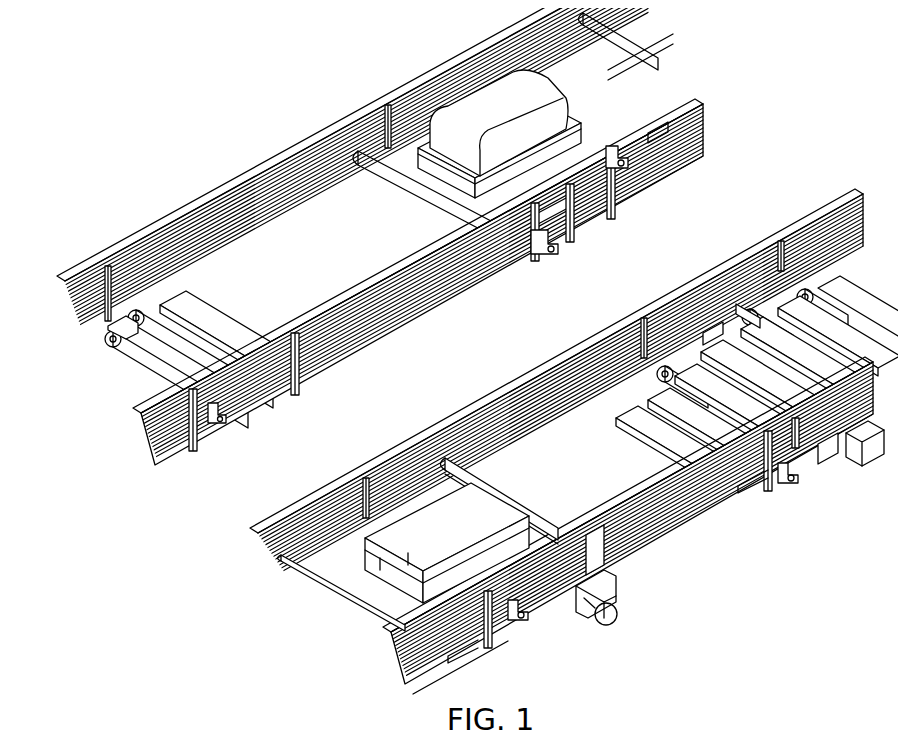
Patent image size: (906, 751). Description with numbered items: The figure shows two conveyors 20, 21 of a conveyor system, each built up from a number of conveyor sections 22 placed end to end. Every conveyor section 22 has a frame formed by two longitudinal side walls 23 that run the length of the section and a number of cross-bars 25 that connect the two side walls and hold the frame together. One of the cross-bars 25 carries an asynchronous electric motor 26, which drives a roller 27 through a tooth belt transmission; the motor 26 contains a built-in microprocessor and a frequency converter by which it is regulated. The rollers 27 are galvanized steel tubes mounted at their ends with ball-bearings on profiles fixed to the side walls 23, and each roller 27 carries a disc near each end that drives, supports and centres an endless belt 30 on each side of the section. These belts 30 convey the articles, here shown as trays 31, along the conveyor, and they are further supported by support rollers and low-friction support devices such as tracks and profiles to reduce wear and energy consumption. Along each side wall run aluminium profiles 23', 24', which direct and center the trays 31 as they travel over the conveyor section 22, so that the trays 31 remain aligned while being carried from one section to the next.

The conveyor 20 is at (334, 98).
The conveyor 21 is at (682, 560).
The conveyor section 22 is at (133, 387).
The longitudinal side wall 23 is at (452, 390).
The aluminium profile 23' is at (548, 411).
The aluminium profile 24' is at (465, 351).
The cross-bar 25 is at (432, 240).
The asynchronous electric motor 26 is at (598, 620).
The roller 27 is at (115, 340).
The endless belt 30 is at (437, 420).
The tray 31 is at (397, 137).